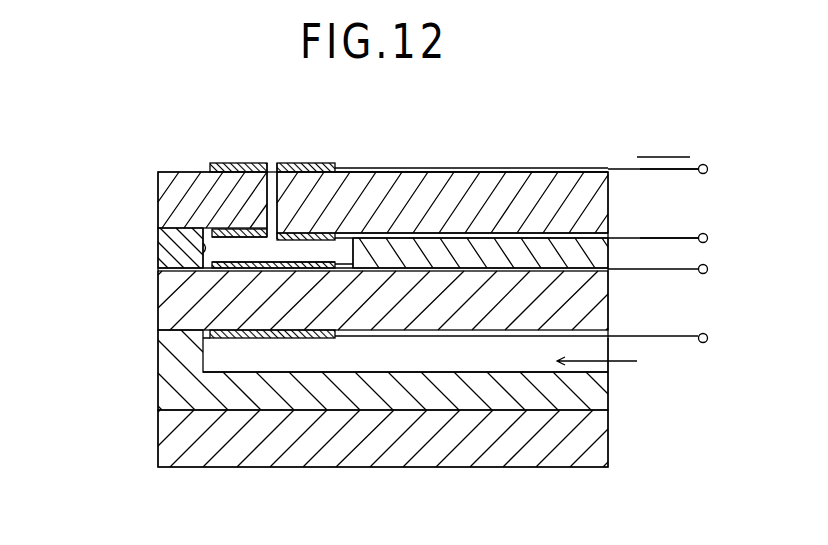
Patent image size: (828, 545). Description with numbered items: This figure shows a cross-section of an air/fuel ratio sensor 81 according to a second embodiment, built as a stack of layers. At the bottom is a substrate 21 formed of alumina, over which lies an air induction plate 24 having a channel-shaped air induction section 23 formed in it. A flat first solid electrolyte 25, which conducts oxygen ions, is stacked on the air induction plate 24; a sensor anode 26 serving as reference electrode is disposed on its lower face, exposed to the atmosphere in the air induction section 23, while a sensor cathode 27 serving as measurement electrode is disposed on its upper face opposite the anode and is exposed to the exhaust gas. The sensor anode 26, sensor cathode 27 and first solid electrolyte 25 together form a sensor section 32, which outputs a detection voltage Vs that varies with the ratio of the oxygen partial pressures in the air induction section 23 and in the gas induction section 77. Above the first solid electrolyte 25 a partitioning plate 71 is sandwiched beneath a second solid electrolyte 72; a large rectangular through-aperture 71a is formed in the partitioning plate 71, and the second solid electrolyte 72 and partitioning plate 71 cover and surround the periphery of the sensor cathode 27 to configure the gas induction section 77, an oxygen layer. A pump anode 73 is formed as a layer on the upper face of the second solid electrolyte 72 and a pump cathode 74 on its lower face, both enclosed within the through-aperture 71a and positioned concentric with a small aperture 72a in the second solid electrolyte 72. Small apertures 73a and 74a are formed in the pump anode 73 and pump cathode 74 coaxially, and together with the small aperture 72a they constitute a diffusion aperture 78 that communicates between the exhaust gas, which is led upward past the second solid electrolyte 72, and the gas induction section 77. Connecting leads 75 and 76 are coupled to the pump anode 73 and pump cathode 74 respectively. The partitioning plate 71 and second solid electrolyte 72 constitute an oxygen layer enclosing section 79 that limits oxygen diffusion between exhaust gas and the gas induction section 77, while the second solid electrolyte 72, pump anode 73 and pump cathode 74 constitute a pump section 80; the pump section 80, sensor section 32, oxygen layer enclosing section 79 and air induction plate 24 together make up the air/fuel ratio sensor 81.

The substrate 21 is at (353, 462).
The air induction section 23 is at (460, 365).
The air induction plate 24 is at (358, 370).
The first solid electrolyte 25 is at (360, 300).
The sensor anode 26 is at (317, 338).
The sensor cathode 27 is at (332, 263).
The sensor section 32 is at (110, 341).
The partitioning plate 71 is at (157, 244).
The through-aperture 71a is at (203, 252).
The second solid electrolyte 72 is at (165, 195).
The small aperture 72a is at (258, 162).
The pump anode 73 is at (331, 163).
The small aperture 73a is at (278, 163).
The pump cathode 74 is at (327, 233).
The small aperture 74a is at (278, 232).
The connecting lead 75 is at (667, 171).
The connecting lead 76 is at (665, 238).
The gas induction section 77 is at (247, 264).
The diffusion aperture 78 is at (269, 139).
The oxygen layer enclosing section 79 is at (106, 163).
The pump section 80 is at (80, 194).
The air/fuel ratio sensor 81 is at (64, 170).